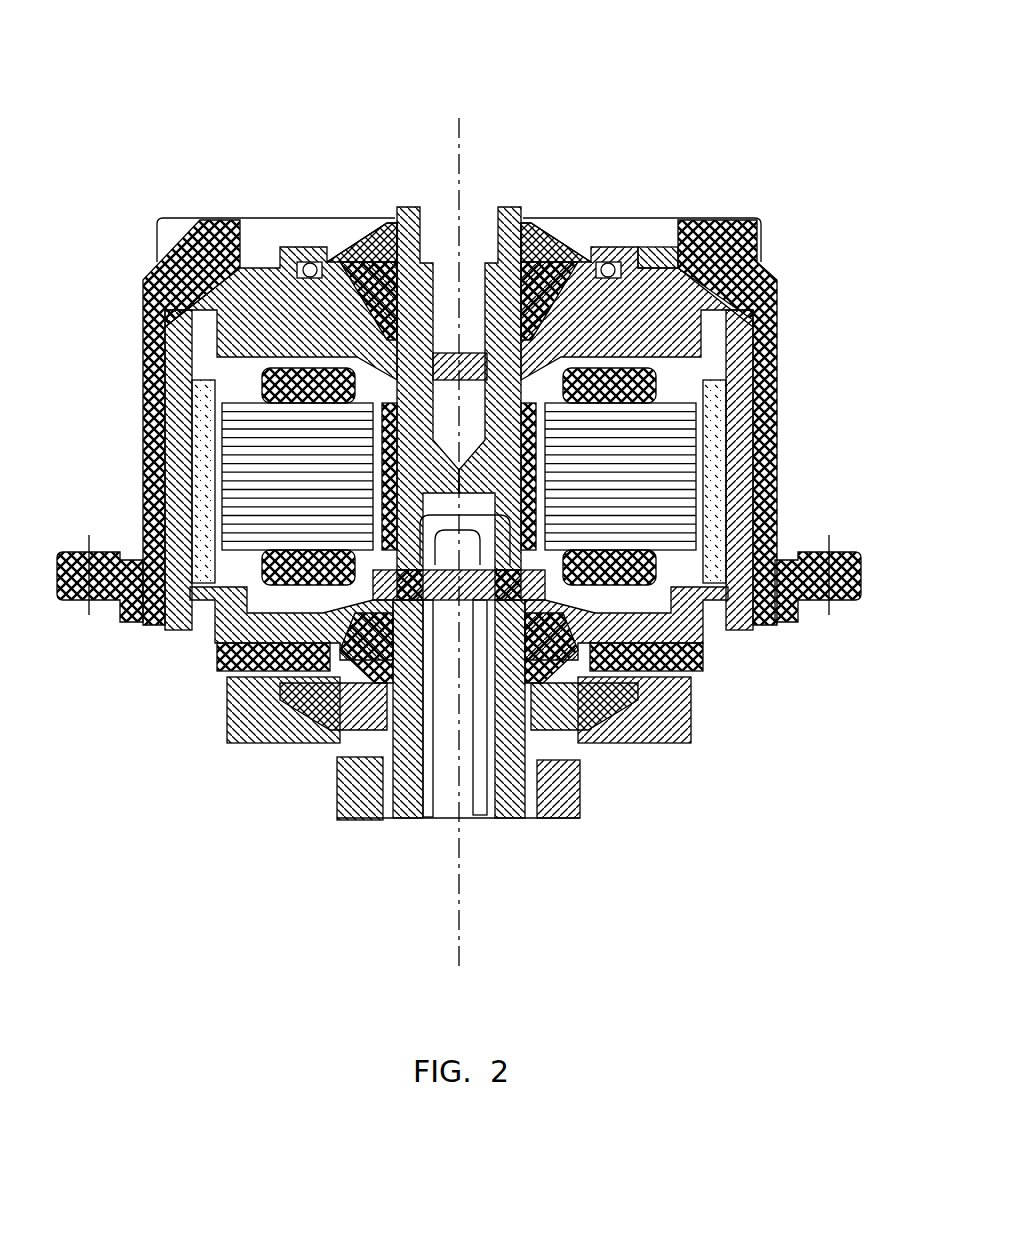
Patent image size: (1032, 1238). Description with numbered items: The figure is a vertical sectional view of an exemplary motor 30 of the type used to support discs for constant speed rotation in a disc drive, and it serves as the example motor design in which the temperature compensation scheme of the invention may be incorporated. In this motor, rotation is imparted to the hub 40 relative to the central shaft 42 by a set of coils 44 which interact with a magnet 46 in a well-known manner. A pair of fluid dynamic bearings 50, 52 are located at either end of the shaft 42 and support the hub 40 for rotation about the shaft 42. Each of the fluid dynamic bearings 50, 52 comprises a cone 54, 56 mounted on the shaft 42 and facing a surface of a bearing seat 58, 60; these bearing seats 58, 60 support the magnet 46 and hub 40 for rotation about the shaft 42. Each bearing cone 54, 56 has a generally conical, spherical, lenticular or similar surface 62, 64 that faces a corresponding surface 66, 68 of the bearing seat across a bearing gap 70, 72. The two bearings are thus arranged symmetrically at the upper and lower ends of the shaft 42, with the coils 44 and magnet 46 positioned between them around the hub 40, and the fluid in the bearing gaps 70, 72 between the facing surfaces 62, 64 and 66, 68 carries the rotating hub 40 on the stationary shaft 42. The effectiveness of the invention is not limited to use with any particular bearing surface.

The motor 30 is at (172, 190).
The hub 40 is at (805, 218).
The shaft 42 is at (513, 213).
The coils 44 is at (640, 462).
The magnet 46 is at (717, 498).
The fluid dynamic bearing 50 is at (602, 208).
The fluid dynamic bearing 52 is at (590, 707).
The cone 54 is at (567, 218).
The cone 56 is at (545, 790).
The bearing seat 58 is at (672, 218).
The bearing seat 60 is at (693, 677).
The surface 62 is at (397, 213).
The surface 64 is at (370, 752).
The surface 66 is at (313, 262).
The surface 68 is at (230, 707).
The bearing gap 70 is at (340, 262).
The bearing gap 72 is at (237, 743).